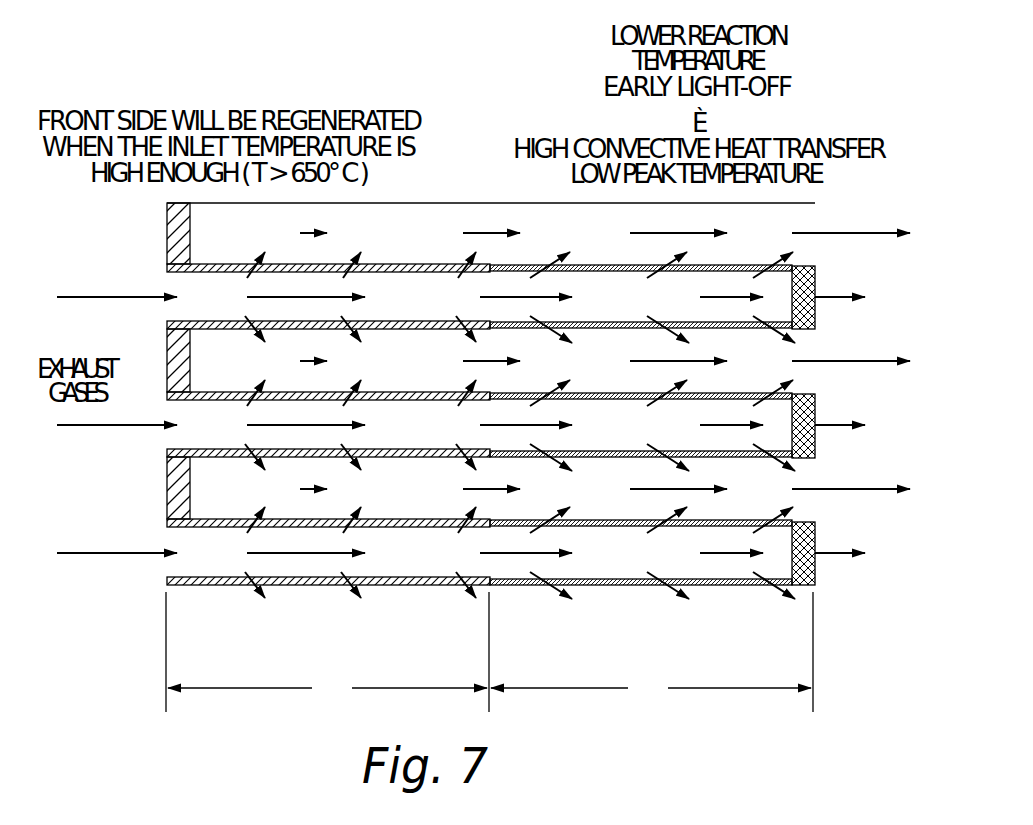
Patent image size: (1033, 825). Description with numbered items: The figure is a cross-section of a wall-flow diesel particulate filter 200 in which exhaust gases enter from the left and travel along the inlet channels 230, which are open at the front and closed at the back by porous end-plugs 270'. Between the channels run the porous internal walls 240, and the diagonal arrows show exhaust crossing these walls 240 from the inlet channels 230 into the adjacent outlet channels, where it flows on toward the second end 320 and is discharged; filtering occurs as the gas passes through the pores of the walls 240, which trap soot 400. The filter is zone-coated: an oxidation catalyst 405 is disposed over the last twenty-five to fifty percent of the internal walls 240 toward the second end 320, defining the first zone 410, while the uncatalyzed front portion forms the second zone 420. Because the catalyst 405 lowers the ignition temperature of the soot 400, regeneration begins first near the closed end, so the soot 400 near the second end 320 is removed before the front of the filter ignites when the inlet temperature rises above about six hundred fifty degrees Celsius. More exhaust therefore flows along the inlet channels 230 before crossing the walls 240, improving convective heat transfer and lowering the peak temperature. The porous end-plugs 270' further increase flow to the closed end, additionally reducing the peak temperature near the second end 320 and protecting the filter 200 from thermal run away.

The particulate filter 200 is at (484, 395).
The inlet channels 230 is at (170, 565).
The porous internal walls 240 is at (435, 457).
The porous end-plug 270' is at (846, 454).
The second end 320 is at (828, 216).
The soot 400 is at (328, 456).
The oxidation catalyst 405 is at (812, 600).
The first zone 410 is at (652, 652).
The second zone 420 is at (327, 652).